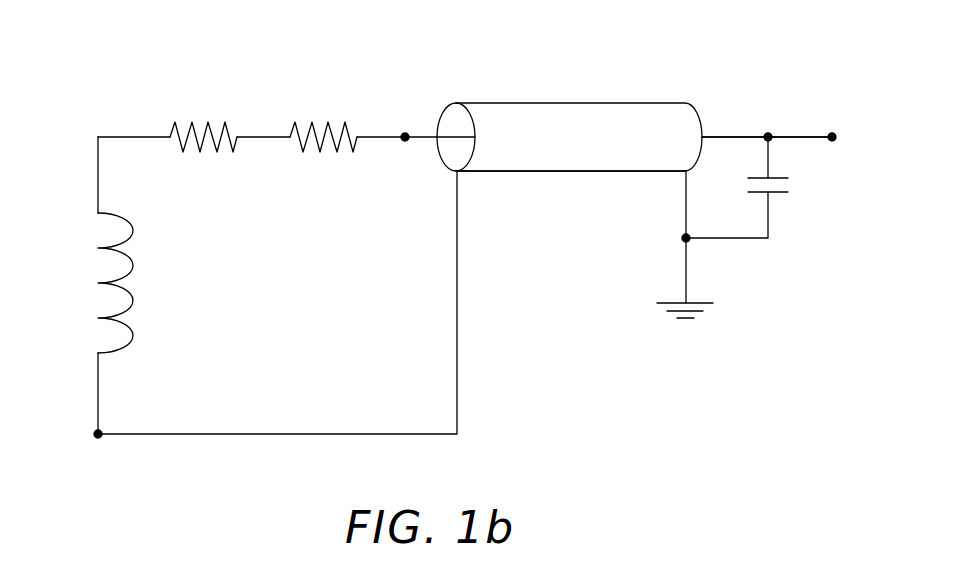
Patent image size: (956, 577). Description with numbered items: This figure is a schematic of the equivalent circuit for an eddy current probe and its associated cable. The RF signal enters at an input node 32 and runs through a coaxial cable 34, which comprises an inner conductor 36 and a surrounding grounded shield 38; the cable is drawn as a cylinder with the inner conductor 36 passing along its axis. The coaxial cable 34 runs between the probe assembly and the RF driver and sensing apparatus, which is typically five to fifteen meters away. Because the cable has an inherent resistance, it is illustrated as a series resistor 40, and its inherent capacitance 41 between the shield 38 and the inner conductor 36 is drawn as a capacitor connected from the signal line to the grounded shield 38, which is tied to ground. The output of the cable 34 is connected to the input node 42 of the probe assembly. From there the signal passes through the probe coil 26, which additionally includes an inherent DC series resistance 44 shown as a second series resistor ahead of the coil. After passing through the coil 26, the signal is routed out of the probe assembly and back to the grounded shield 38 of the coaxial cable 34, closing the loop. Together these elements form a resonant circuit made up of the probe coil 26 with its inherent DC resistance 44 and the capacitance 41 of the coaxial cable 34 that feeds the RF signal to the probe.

The probe coil 26 is at (98, 282).
The inherent DC series resistance 44 is at (192, 122).
The series resistor 40 is at (312, 122).
The input node 42 is at (405, 133).
The coaxial cable 34 is at (594, 80).
The grounded shield 38 is at (607, 172).
The inner conductor 36 is at (790, 139).
The input node 32 is at (832, 133).
The inherent capacitance 41 is at (786, 194).